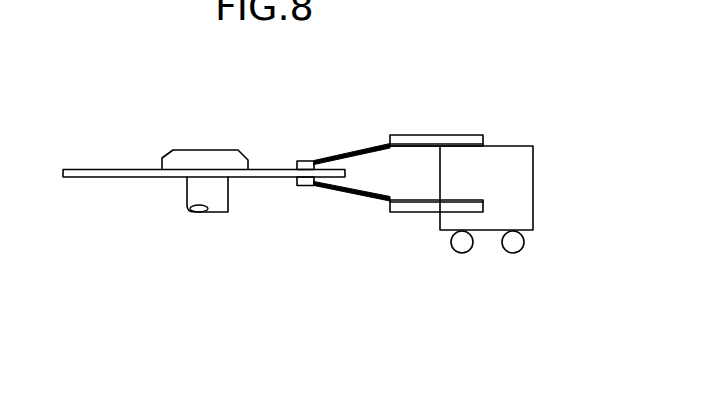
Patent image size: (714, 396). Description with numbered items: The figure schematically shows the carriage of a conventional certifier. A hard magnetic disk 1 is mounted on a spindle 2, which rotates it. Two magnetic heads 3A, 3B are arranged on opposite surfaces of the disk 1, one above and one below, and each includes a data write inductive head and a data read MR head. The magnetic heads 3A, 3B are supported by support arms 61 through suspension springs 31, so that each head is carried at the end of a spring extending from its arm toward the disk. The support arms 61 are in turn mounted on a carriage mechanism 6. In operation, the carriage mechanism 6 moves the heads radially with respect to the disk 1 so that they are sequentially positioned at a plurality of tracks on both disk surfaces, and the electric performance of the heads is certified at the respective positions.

The hard magnetic disk 1 is at (72, 168).
The spindle 2 is at (175, 155).
The magnetic head 3A is at (297, 163).
The magnetic head 3B is at (302, 187).
The suspension spring 31 is at (355, 148).
The support arm 61 is at (424, 139).
The carriage mechanism 6 is at (525, 196).